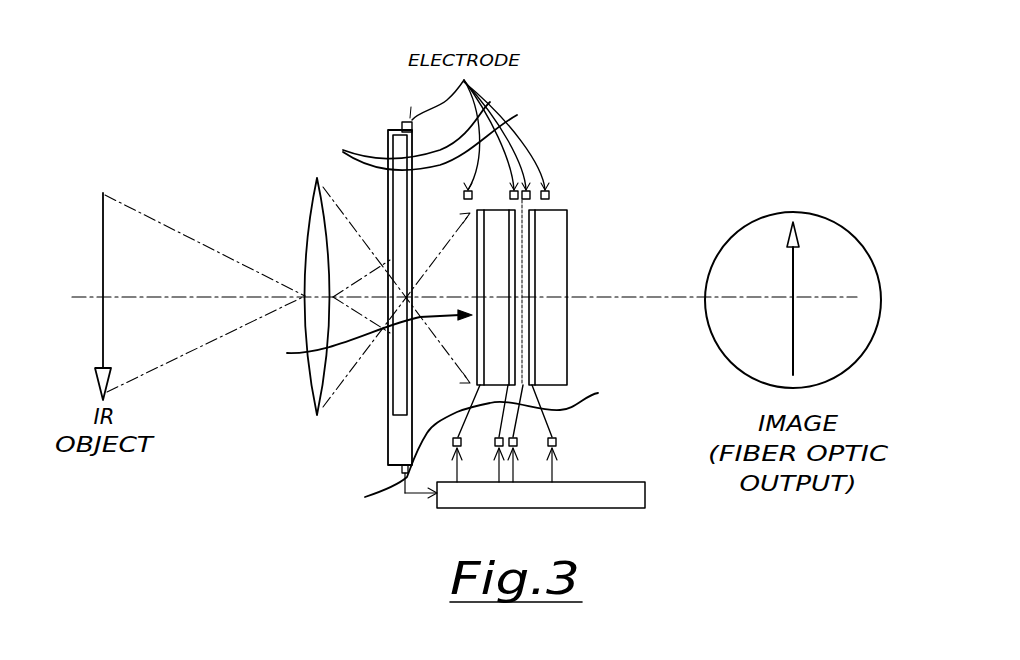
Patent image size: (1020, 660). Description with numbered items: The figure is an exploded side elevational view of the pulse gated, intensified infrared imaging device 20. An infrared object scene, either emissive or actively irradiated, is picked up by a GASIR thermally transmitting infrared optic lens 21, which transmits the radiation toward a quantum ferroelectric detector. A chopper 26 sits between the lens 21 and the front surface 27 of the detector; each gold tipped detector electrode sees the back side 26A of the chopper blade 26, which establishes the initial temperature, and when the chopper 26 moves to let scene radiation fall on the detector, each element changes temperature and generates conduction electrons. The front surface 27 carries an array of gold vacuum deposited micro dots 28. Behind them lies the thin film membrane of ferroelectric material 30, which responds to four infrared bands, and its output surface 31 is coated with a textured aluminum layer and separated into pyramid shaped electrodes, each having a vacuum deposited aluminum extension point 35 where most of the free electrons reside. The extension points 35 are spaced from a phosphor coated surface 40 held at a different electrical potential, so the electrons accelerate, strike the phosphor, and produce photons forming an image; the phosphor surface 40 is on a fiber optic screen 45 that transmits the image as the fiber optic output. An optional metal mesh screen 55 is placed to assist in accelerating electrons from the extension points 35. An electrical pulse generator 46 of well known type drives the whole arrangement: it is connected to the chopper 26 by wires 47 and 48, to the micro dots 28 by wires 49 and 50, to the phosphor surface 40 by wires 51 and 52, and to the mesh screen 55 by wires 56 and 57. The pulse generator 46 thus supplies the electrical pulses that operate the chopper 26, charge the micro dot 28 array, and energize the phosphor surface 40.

The imaging device 20 is at (530, 30).
The infrared optic lens 21 is at (311, 397).
The chopper 26 is at (392, 131).
The back side of chopper blade 26A is at (413, 370).
The front surface 27 is at (361, 338).
The gold micro dots 28 is at (477, 270).
The ferroelectric material 30 is at (493, 327).
The output surface 31 is at (512, 255).
The extension points 35 is at (512, 223).
The phosphor coated surface 40 is at (533, 283).
The fiber optic screen 45 is at (562, 358).
The pulse generator 46 is at (640, 560).
The wire 47 is at (440, 103).
The wire 48 is at (406, 493).
The wire 49 is at (413, 136).
The wire 50 is at (463, 452).
The wire 51 is at (548, 427).
The wire 52 is at (490, 102).
The metal mesh screen 55 is at (558, 147).
The wire 56 is at (540, 432).
The wire 57 is at (517, 115).